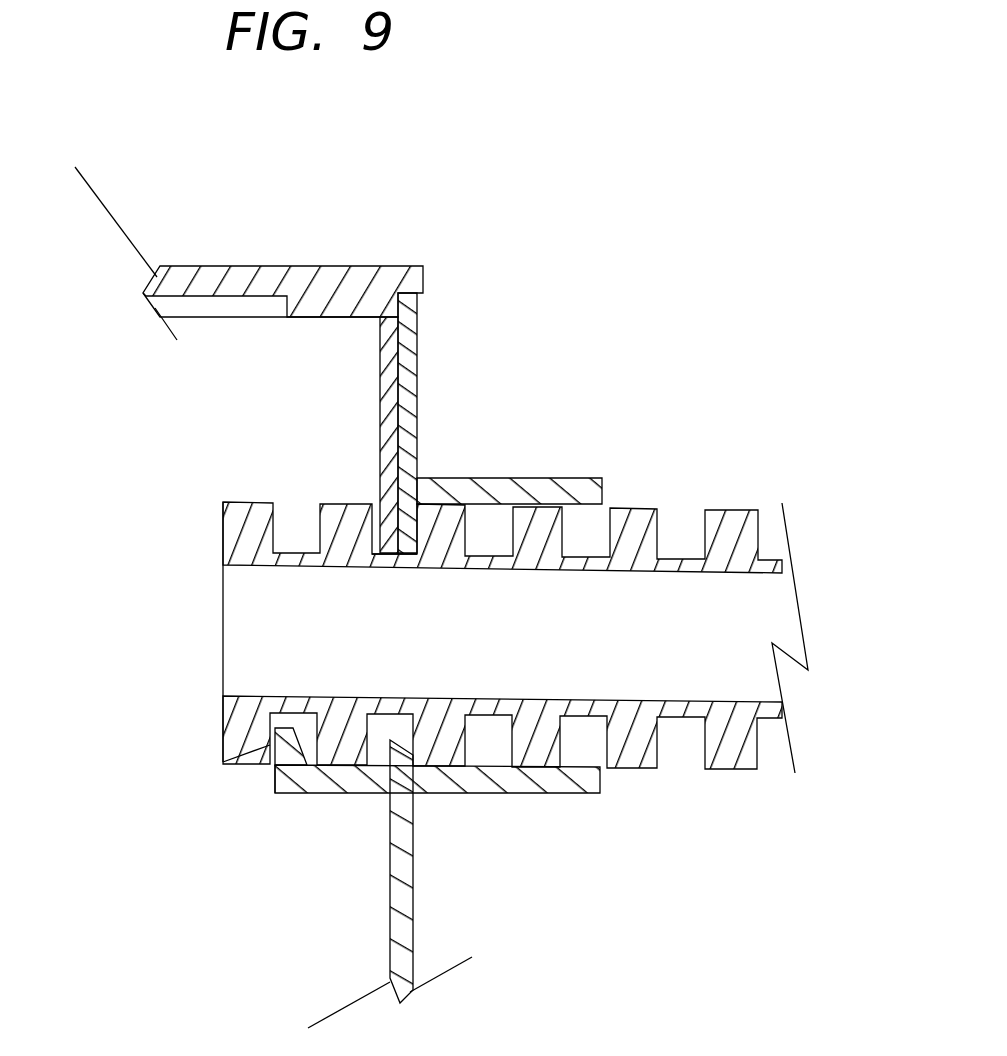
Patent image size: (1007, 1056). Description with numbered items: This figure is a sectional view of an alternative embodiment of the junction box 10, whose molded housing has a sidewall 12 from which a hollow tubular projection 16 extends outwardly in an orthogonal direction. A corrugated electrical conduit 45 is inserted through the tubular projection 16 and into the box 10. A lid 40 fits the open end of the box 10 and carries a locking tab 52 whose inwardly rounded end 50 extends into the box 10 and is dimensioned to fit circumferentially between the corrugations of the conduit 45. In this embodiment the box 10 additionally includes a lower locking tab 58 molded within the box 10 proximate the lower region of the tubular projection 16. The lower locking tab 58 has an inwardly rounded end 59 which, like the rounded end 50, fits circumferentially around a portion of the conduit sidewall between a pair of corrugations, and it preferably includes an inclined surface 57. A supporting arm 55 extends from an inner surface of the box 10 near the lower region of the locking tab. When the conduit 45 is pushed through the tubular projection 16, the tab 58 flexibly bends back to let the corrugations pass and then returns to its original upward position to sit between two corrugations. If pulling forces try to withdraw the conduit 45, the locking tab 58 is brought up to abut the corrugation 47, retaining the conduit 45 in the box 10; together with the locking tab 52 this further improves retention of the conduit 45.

The junction box 10 is at (688, 192).
The sidewall 12 is at (415, 873).
The tubular projection 16 is at (513, 479).
The lid 40 is at (290, 267).
The corrugated electrical conduit 45 is at (738, 512).
The corrugation 47 is at (223, 762).
The inwardly rounded end 50 is at (378, 553).
The locking tab 52 is at (385, 373).
The supporting arm 55 is at (343, 797).
The inclined surface 57 is at (325, 710).
The lower locking tab 58 is at (272, 775).
The inwardly rounded end 59 is at (288, 731).